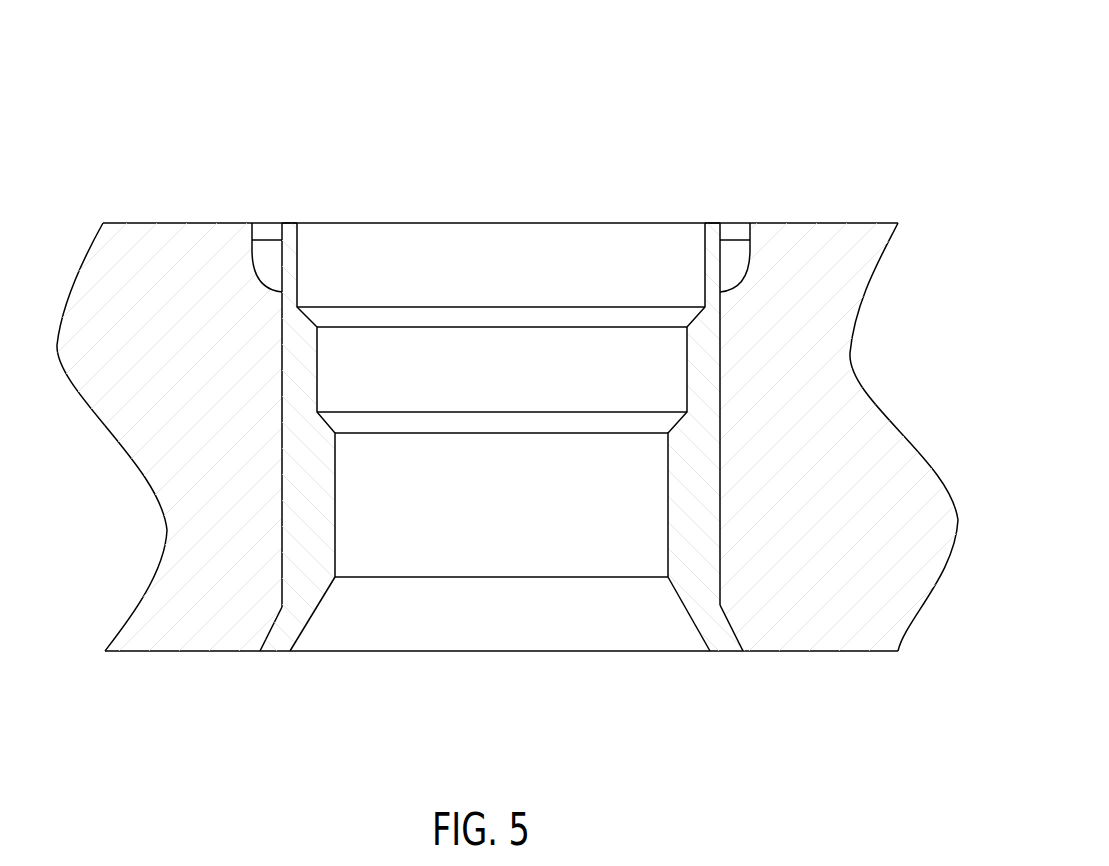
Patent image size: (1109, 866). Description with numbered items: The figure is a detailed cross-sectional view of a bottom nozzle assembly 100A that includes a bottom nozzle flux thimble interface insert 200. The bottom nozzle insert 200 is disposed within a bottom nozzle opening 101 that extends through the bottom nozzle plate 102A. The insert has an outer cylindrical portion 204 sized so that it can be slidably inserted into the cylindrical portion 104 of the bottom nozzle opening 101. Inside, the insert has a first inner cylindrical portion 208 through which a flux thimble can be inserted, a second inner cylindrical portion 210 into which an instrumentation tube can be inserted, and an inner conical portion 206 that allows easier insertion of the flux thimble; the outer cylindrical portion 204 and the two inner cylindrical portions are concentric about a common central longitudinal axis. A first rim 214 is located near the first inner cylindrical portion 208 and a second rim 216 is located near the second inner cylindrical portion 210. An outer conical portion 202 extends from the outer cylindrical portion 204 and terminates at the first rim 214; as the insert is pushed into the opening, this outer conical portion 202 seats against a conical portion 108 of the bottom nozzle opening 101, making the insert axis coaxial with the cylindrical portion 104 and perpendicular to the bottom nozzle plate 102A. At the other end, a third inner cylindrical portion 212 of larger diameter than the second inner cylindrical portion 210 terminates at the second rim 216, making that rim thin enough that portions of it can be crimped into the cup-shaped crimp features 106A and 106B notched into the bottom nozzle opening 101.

The bottom nozzle assembly 100A is at (832, 78).
The bottom nozzle opening 101 is at (368, 199).
The bottom nozzle plate 102A is at (117, 240).
The cylindrical portion 104 is at (282, 455).
The crimp feature 106A is at (268, 232).
The crimp feature 106B is at (738, 234).
The conical portion 108 is at (280, 612).
The bottom nozzle flux thimble interface insert 200 is at (468, 672).
The outer conical portion 202 is at (270, 631).
The outer cylindrical portion 204 is at (283, 562).
The inner conical portion 206 is at (694, 620).
The first inner cylindrical portion 208 is at (667, 487).
The second inner cylindrical portion 210 is at (688, 367).
The third inner cylindrical portion 212 is at (705, 262).
The first rim 214 is at (713, 644).
The second rim 216 is at (711, 232).